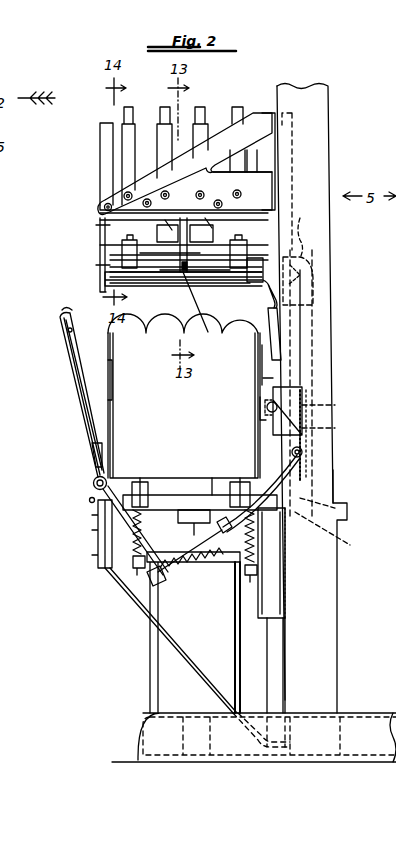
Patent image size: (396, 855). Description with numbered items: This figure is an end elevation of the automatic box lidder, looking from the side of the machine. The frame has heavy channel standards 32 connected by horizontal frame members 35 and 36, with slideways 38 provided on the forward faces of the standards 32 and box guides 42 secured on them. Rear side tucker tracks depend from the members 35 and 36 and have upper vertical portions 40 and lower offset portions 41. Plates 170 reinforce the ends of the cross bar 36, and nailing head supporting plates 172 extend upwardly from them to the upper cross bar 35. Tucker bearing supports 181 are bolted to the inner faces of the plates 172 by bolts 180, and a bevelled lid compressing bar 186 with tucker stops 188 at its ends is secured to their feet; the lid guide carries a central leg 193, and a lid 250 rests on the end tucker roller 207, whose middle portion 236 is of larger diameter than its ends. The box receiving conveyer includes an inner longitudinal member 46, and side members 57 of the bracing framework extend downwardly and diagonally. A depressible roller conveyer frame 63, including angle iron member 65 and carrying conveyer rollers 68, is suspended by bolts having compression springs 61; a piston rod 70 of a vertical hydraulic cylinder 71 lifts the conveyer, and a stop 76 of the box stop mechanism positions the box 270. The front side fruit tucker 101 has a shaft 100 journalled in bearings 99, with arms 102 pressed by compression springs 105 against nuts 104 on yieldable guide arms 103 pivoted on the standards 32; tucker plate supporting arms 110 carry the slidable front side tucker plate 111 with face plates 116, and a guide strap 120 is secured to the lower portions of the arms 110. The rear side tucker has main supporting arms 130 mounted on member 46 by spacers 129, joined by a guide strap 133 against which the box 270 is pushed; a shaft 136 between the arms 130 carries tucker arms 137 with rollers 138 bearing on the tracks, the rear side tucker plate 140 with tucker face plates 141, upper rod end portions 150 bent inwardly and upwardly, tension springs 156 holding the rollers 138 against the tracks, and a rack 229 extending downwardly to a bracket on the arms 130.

The channel standards 32 is at (336, 605).
The horizontal frame member 36 is at (350, 486).
The nailing head supporting plates 172 is at (222, 125).
The horizontal frame member 35 is at (264, 112).
The reinforcing plates 170 is at (277, 194).
The bolts 180 is at (218, 200).
The tucker bearing supports 181 is at (212, 216).
The tucker stops 188 is at (100, 225).
The lid compressing bar 186 is at (122, 250).
The middle portion of the roller 236 is at (105, 274).
The lid 250 is at (160, 258).
The end tucker roller 207 is at (175, 285).
The upper end portions of the rods 150 is at (255, 284).
The tucker face plates 141 is at (267, 318).
The central leg 193 is at (204, 333).
The rollers 138 is at (300, 275).
The lower offset portions 41 is at (305, 294).
The rack 229 is at (305, 323).
The upper vertical portions 40 is at (300, 219).
The box guides 42 is at (302, 393).
The tension springs 156 is at (334, 415).
The shaft 136 is at (268, 413).
The guide strap 133 is at (260, 400).
The tucker arms 137 is at (272, 378).
The rear side tucker plate 140 is at (262, 345).
The yieldable guide arms 103 is at (305, 453).
The main supporting arms 130 is at (335, 508).
The spacers 129 is at (338, 531).
The box 270 is at (135, 418).
The tucker plate supporting arms 110 is at (78, 385).
The front side tucker plate 111 is at (75, 362).
The face plates 116 is at (78, 302).
The front side fruit tucker 101 is at (42, 337).
The guide strap 120 is at (92, 455).
The shaft 100 is at (94, 485).
The arms 102 is at (90, 500).
The bearings 99 is at (97, 530).
The side members 57 is at (167, 599).
The nuts 104 is at (168, 582).
The depressible roller conveyer frame 63 is at (160, 498).
The conveyer rollers 68 is at (238, 486).
The stop 76 is at (215, 487).
The piston rod 70 is at (190, 530).
The compression springs 61 is at (262, 545).
The hydraulic cylinder 71 is at (158, 648).
The compression springs 105 is at (190, 557).
The inner longitudinal member 46 is at (228, 532).
The slideways 38 is at (275, 592).
The angle iron member 65 is at (272, 648).